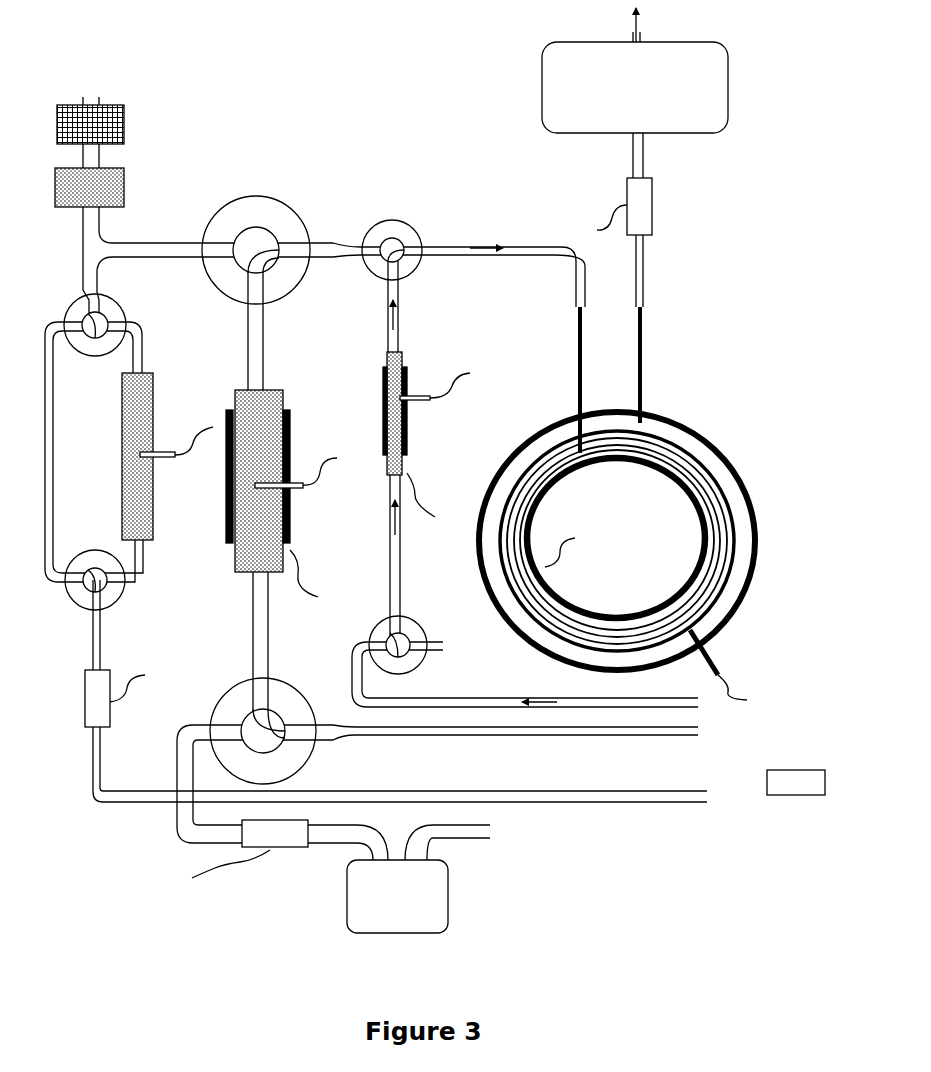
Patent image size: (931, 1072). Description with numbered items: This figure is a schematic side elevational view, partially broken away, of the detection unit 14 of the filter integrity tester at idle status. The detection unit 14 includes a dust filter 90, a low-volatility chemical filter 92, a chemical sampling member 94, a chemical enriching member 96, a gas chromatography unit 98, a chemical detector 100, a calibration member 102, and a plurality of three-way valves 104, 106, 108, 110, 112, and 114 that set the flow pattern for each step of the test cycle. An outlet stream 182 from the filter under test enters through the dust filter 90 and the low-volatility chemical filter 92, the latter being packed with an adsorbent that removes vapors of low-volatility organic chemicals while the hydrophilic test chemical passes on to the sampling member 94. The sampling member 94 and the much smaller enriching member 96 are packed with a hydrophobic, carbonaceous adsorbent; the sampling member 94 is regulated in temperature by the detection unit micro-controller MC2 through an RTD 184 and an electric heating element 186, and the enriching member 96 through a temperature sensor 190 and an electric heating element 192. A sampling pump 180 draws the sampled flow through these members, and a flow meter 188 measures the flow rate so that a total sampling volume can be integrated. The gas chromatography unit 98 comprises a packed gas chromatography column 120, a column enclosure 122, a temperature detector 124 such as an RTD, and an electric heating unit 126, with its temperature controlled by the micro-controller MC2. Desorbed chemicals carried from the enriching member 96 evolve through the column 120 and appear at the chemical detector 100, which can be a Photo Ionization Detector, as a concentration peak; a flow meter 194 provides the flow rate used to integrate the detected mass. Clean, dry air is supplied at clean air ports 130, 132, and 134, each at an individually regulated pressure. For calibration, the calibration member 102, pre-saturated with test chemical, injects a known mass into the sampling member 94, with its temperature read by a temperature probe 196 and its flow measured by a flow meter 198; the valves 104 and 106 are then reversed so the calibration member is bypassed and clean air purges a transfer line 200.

The detection unit 14 is at (359, 153).
The dust filter 90 is at (125, 123).
The low-volatility chemical filter 92 is at (107, 187).
The chemical sampling member 94 is at (247, 440).
The chemical enriching member 96 is at (387, 388).
The gas chromatography unit 98 is at (755, 533).
The chemical detector 100 is at (573, 90).
The calibration member 102 is at (125, 403).
The three-way valve 104 is at (78, 310).
The three-way valve 106 is at (113, 593).
The three-way valve 108 is at (268, 213).
The three-way valve 110 is at (240, 702).
The three-way valve 112 is at (402, 235).
The three-way valve 114 is at (385, 628).
The packed gas chromatography column 120 is at (647, 448).
The column enclosure 122 is at (727, 463).
The temperature detector 124 is at (713, 655).
The electric heating unit 126 is at (550, 497).
The clean air port 130 is at (703, 703).
The clean air port 132 is at (705, 732).
The clean air port 134 is at (712, 800).
The sampling pump 180 is at (415, 900).
The outlet stream 182 is at (95, 92).
The RTD 184 is at (293, 490).
The electric heating element 186 is at (288, 428).
The flow meter 188 is at (278, 830).
The temperature sensor 190 is at (417, 402).
The electric heating element 192 is at (407, 388).
The flow meter 194 is at (645, 208).
The temperature probe 196 is at (163, 458).
The flow meter 198 is at (95, 695).
The transfer line 200 is at (90, 262).
The detection unit micro-controller MC2 is at (800, 800).